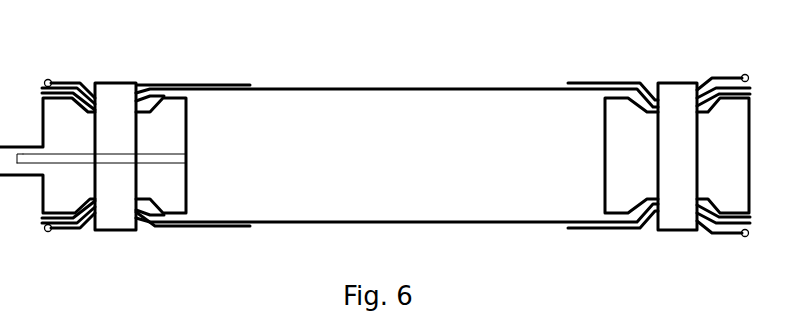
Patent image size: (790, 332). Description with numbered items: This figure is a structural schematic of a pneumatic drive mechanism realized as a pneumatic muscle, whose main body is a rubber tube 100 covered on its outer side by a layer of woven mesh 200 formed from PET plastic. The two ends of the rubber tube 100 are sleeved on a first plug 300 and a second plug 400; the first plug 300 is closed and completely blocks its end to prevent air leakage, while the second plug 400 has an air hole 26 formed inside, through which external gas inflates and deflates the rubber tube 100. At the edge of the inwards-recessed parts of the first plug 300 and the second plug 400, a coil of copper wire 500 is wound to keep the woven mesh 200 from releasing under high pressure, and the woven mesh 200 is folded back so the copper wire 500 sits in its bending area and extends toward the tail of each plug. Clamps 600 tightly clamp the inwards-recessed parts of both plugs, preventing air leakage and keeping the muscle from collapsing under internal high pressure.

The rubber tube 100 is at (320, 88).
The woven mesh 200 is at (225, 83).
The first plug 300 is at (618, 138).
The second plug 400 is at (173, 127).
The copper wire 500 is at (50, 82).
The clamp 600 is at (117, 97).
The air hole 26 is at (170, 160).